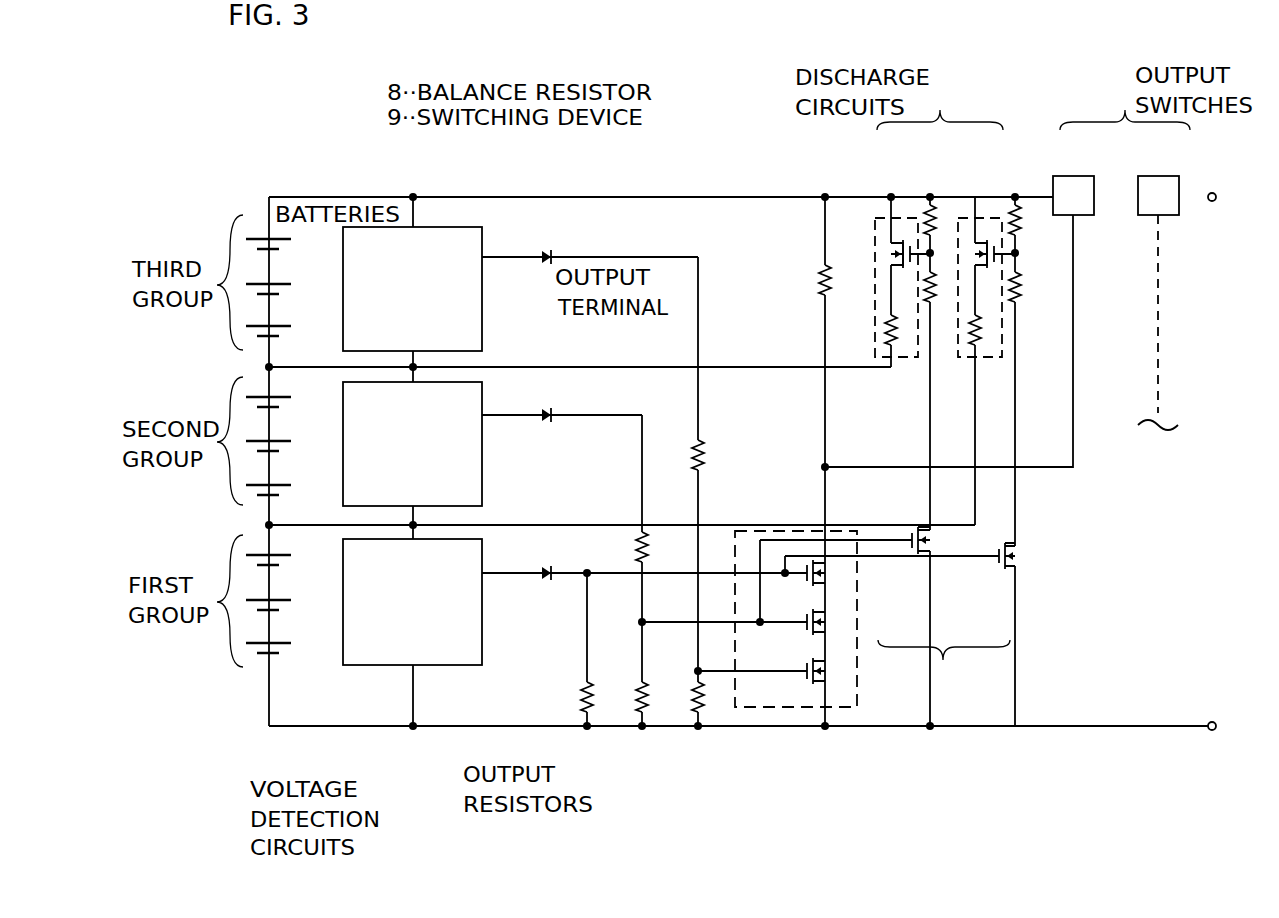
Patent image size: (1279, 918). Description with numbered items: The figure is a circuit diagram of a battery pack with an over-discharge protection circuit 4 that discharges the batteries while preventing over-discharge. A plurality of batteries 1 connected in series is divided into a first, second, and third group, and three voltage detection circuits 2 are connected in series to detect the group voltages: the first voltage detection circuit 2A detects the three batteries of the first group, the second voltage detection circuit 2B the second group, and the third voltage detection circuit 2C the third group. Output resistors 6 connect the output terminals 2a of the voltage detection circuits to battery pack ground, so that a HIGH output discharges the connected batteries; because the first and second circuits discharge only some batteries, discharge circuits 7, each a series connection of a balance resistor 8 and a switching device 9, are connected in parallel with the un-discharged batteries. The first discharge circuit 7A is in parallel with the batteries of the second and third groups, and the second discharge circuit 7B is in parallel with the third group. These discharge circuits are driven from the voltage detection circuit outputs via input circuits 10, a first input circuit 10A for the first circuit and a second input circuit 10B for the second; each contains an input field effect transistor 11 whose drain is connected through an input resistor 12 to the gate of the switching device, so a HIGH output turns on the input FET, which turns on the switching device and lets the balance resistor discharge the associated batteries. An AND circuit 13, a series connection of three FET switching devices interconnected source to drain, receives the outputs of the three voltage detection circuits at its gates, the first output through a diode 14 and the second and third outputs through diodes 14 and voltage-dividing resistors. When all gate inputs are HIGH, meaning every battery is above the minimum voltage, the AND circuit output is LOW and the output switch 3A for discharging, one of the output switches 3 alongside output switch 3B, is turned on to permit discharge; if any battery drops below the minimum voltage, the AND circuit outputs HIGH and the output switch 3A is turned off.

The battery 1 is at (282, 284).
The voltage detection circuit 2 is at (432, 502).
The first voltage detection circuit 2A is at (478, 665).
The second voltage detection circuit 2B is at (484, 465).
The third voltage detection circuit 2C is at (484, 306).
The output terminal 2a is at (484, 260).
The output switches 3 is at (1121, 147).
The output switch for discharging 3A is at (1073, 176).
The output switch 3B is at (1158, 176).
The over-discharge protection circuit 4 is at (733, 745).
The output resistor 6 is at (700, 450).
The discharge circuit 7 is at (945, 218).
The first discharge circuit 7A is at (965, 218).
The second discharge circuit 7B is at (880, 218).
The balance resistor 8 is at (885, 328).
The switching device 9 is at (890, 252).
The input circuit 10 is at (946, 605).
The first input circuit 10A is at (990, 570).
The second input circuit 10B is at (912, 566).
The input field effect transistor 11 is at (922, 528).
The input resistor 12 is at (927, 295).
The AND circuit 13 is at (812, 707).
The diode 14 is at (553, 253).